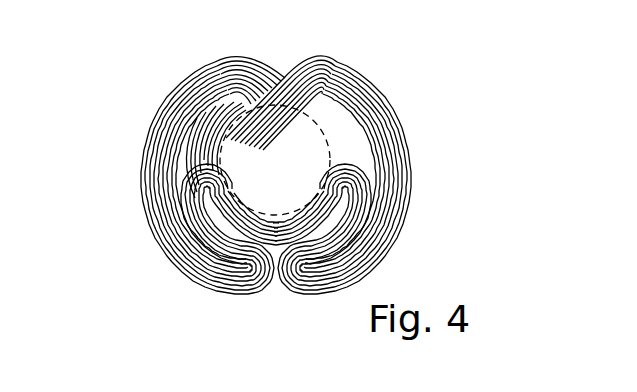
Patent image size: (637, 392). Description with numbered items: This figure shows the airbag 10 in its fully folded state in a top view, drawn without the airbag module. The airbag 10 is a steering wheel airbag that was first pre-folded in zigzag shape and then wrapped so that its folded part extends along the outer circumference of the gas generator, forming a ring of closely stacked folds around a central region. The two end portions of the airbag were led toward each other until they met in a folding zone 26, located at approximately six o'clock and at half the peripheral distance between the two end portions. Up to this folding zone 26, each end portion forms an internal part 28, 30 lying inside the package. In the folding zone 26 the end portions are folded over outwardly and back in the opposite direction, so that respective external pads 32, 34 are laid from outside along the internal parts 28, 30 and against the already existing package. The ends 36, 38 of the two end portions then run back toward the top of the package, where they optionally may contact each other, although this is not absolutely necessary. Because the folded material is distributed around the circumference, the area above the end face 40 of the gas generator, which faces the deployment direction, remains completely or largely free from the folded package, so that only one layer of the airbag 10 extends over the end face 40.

The airbag 10 is at (393, 99).
The folding zone 26 is at (278, 278).
The internal part 28 is at (166, 250).
The internal part 30 is at (369, 270).
The external pad 32 is at (146, 219).
The external pad 34 is at (405, 233).
The end 36 is at (234, 64).
The end 38 is at (327, 63).
The end face 40 is at (280, 163).